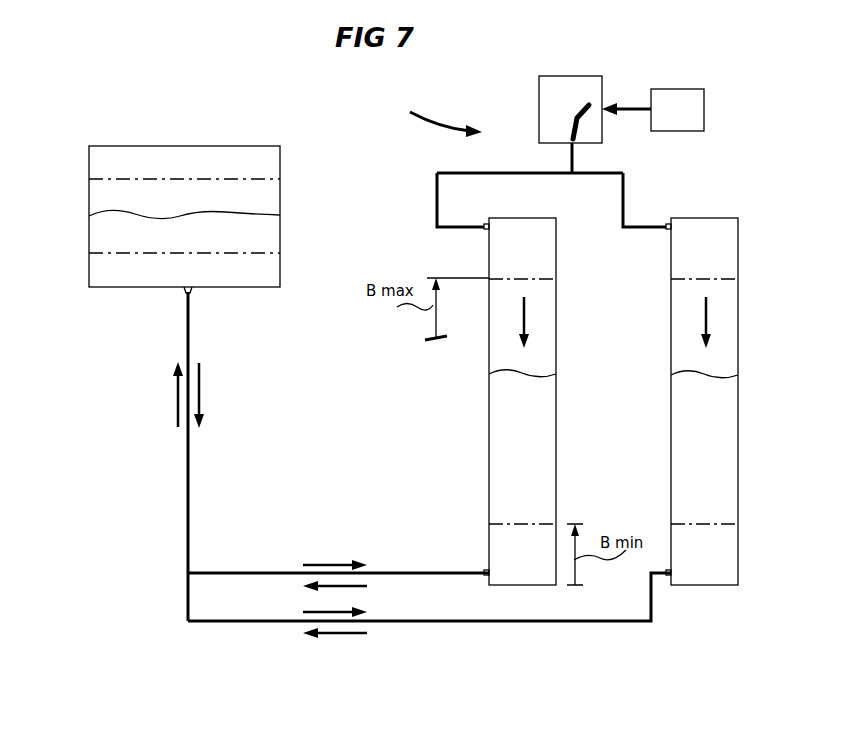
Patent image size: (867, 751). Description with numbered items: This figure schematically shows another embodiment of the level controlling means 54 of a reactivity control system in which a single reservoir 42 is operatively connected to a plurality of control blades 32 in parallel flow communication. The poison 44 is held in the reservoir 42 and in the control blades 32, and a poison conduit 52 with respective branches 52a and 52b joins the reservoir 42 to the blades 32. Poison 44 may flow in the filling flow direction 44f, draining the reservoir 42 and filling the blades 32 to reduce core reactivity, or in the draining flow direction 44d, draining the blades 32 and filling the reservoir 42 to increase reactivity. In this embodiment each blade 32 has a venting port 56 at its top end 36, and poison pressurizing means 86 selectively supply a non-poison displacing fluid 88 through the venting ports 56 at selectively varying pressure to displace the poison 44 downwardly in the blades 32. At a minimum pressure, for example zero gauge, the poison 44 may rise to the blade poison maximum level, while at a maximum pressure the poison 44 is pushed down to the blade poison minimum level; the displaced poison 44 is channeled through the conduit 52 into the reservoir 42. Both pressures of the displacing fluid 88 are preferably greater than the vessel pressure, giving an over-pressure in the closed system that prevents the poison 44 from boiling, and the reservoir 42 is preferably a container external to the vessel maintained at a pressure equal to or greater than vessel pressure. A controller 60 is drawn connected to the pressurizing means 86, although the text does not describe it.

The reservoir 42 is at (89, 151).
The poison 44 is at (264, 232).
The draining flow direction 44d is at (176, 398).
The filling flow direction 44f is at (203, 397).
The poison conduit 52 is at (188, 519).
The first branch of poison conduit 52a is at (247, 573).
The second branch of poison conduit 52b is at (236, 624).
The level controlling means 54 is at (432, 113).
The venting port 56 is at (486, 224).
The controller 60 is at (691, 89).
The poison pressurizing means 86 is at (582, 76).
The displacing fluid 88 is at (580, 110).
The blade top end 36 is at (557, 239).
The control blades 32 is at (671, 312).